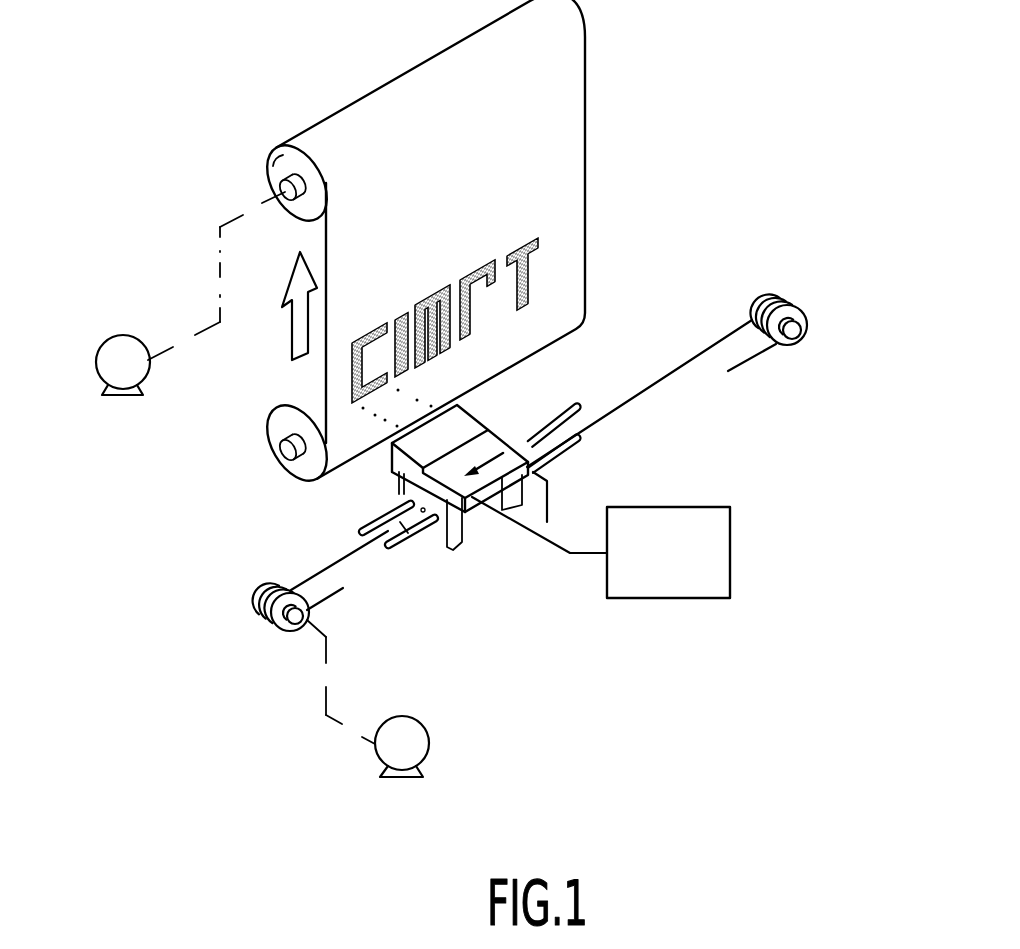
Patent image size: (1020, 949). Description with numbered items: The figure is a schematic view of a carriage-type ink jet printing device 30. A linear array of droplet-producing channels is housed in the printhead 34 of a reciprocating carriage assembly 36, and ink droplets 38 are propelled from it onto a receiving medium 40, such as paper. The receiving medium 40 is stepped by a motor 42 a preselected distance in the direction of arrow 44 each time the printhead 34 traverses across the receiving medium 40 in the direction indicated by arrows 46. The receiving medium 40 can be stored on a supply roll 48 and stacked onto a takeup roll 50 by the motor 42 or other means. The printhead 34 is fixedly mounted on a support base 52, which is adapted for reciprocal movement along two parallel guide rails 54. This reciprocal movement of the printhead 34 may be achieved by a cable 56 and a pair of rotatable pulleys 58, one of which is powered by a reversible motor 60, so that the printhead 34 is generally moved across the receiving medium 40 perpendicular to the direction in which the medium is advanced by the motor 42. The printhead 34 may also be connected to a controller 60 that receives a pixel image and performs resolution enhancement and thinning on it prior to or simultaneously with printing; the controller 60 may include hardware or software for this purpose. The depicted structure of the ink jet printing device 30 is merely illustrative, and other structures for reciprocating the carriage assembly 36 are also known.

The ink jet printing device 30 is at (650, 160).
The printhead 34 is at (400, 489).
The reciprocating carriage assembly 36 is at (560, 491).
The ink droplets 38 is at (406, 398).
The receiving medium 40 is at (584, 123).
The motor 42 is at (110, 342).
The arrow 44 is at (291, 334).
The arrows 46 is at (489, 466).
The supply roll 48 is at (268, 422).
The takeup roll 50 is at (268, 173).
The support base 52 is at (397, 502).
The guide rails 54 is at (405, 544).
The cable 56 is at (308, 578).
The rotatable pulleys 58 is at (810, 317).
The controller 60 is at (731, 527).